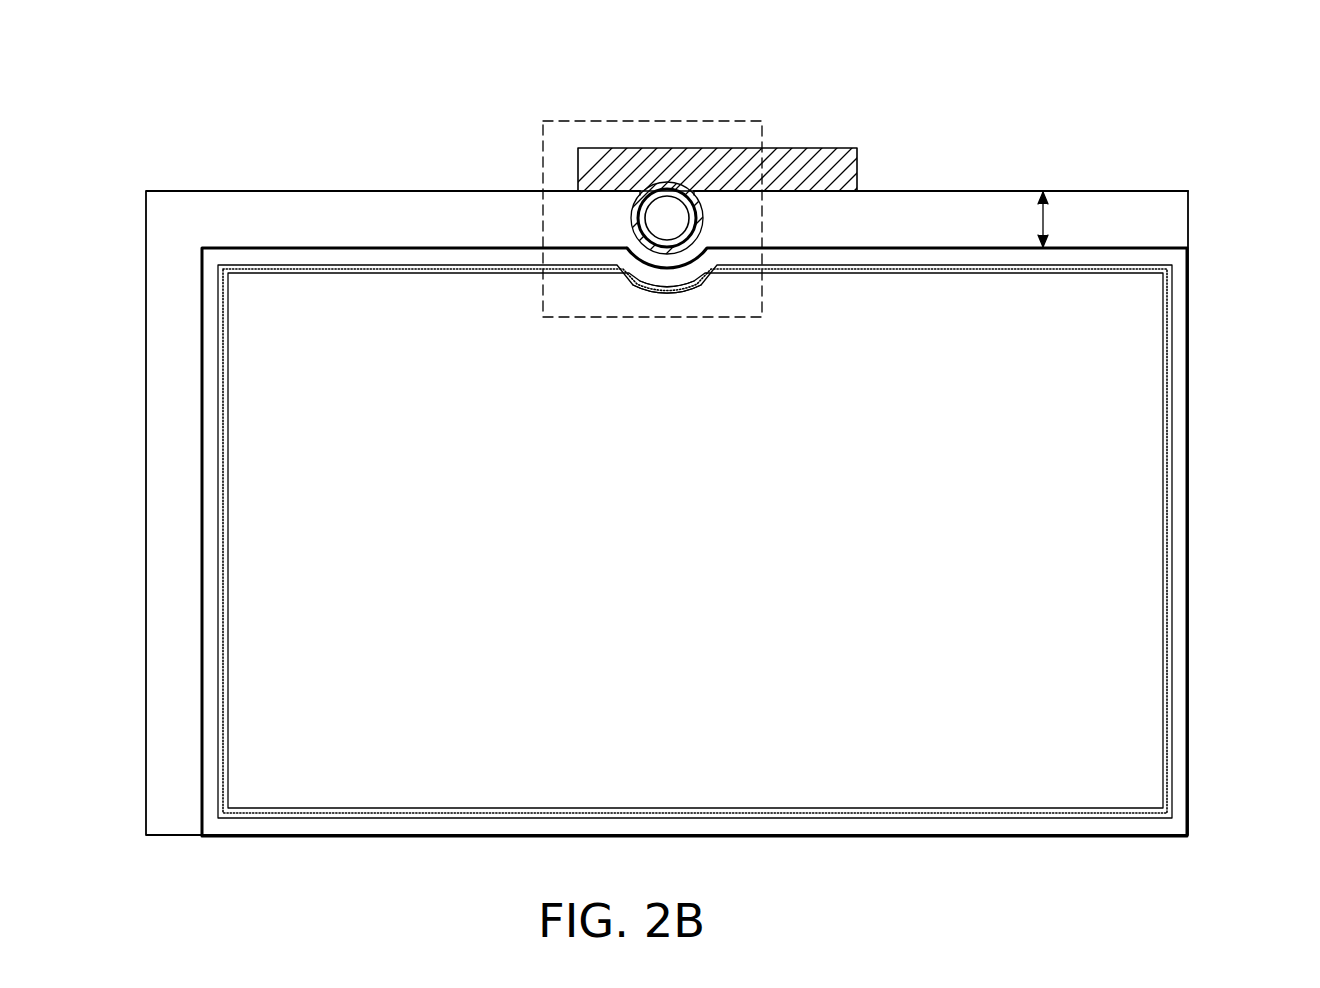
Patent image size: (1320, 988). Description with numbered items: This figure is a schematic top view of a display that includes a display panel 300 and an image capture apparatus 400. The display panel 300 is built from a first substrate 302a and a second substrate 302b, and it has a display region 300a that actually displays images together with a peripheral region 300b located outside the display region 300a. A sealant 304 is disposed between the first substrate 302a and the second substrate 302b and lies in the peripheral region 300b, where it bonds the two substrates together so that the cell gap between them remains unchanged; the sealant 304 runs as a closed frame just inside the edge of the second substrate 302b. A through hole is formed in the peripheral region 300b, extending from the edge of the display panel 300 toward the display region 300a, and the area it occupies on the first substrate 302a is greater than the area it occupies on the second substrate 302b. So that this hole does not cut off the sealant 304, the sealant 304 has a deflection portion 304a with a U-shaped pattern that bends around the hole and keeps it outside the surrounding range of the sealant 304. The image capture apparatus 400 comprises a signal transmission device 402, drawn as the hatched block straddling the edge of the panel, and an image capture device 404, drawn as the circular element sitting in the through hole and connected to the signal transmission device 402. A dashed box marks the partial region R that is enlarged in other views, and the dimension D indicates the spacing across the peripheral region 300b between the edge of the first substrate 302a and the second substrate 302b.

The display panel 300 is at (1319, 837).
The display region 300a is at (1114, 423).
The peripheral region 300b is at (1143, 225).
The first substrate 302a is at (170, 361).
The second substrate 302b is at (212, 407).
The sealant 304 is at (220, 462).
The deflection portion 304a is at (677, 295).
The image capture apparatus 400 is at (718, 67).
The signal transmission device 402 is at (713, 171).
The image capture device 404 is at (665, 192).
The partial region R is at (543, 162).
The distance D is at (1051, 219).